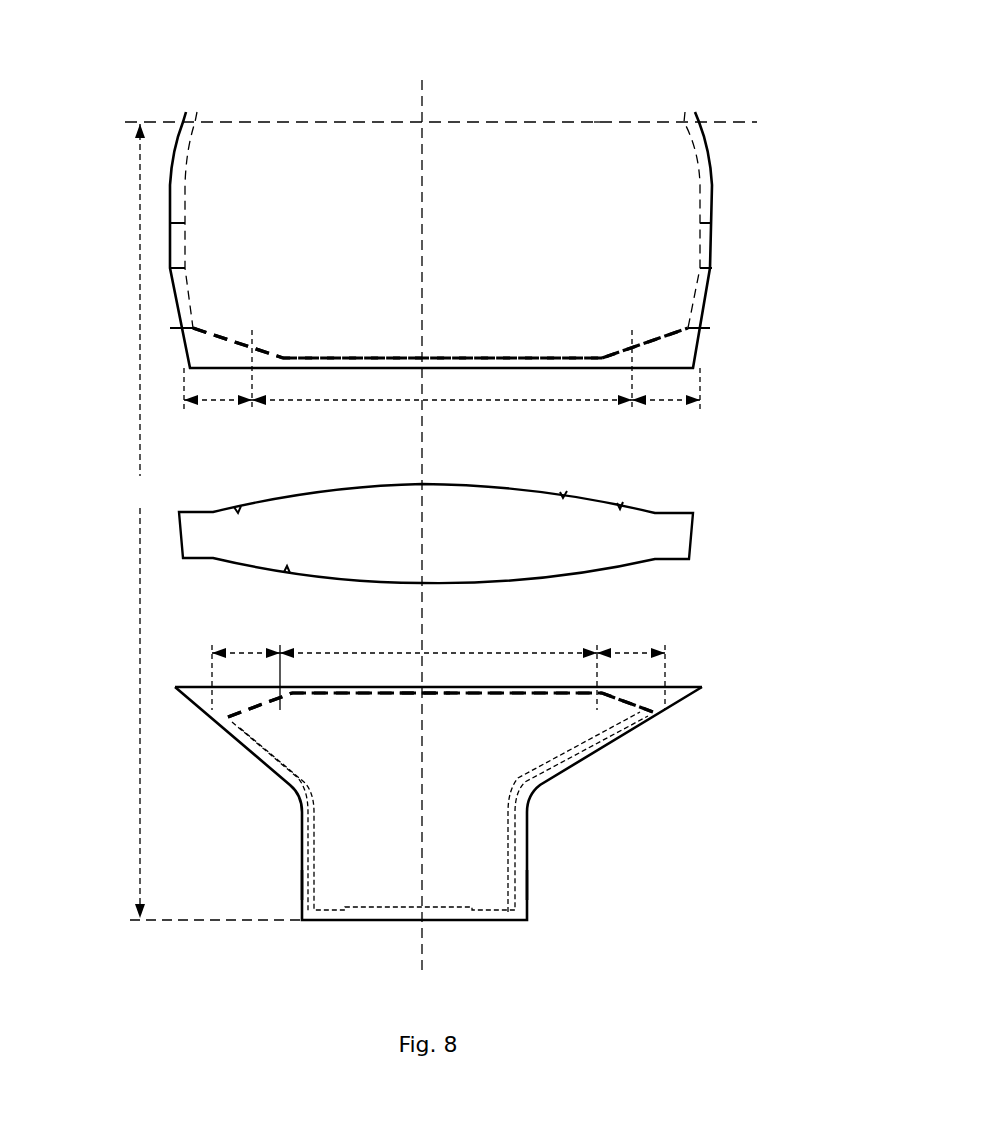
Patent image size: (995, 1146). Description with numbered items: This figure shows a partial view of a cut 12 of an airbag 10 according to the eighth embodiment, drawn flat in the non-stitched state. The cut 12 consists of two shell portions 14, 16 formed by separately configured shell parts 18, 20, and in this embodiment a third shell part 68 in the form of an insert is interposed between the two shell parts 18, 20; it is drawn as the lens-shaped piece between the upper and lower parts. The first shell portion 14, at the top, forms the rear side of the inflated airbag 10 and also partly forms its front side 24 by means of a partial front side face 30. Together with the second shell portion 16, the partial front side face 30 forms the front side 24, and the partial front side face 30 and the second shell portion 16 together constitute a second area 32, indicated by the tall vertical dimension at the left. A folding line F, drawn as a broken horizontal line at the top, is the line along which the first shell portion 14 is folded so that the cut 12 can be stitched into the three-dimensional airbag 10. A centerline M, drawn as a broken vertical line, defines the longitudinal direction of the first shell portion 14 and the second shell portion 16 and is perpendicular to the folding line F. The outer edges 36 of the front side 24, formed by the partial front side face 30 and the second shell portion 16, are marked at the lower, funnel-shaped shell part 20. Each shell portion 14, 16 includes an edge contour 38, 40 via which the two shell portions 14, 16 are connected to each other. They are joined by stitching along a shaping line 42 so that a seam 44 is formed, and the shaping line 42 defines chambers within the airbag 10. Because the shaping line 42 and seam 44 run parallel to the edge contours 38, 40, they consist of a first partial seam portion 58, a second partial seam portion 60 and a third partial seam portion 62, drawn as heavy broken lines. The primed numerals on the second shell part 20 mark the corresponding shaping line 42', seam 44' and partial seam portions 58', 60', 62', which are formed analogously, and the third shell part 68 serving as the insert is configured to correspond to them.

The airbag 10 is at (110, 95).
The cut 12 is at (468, 216).
The first shell portion 14 is at (768, 112).
The folding line F is at (598, 120).
The centerline M is at (428, 100).
The second shell portion 16 is at (452, 782).
The shell part 18 is at (700, 255).
The shell part 20 is at (540, 778).
The front side 24 is at (469, 511).
The partial front side face 30 is at (680, 152).
The second area 32 is at (214, 522).
The outer edges 36 is at (308, 878).
The edge contour 38 is at (598, 356).
The edge contour 40 is at (625, 682).
The shaping line 42 is at (440, 315).
The center fold section (funnel) 42' is at (421, 753).
The seam 44 is at (274, 333).
The fold point (funnel) 44' is at (332, 695).
The first partial seam portion 58 is at (238, 298).
The left inclined fold section (funnel) 58' is at (289, 729).
The second partial seam portion 60 is at (442, 312).
The bottom fold section (funnel) 60' is at (447, 753).
The third partial seam portion 62 is at (645, 300).
The right inclined fold section (funnel) 62' is at (563, 731).
The third shell part 68 is at (380, 500).